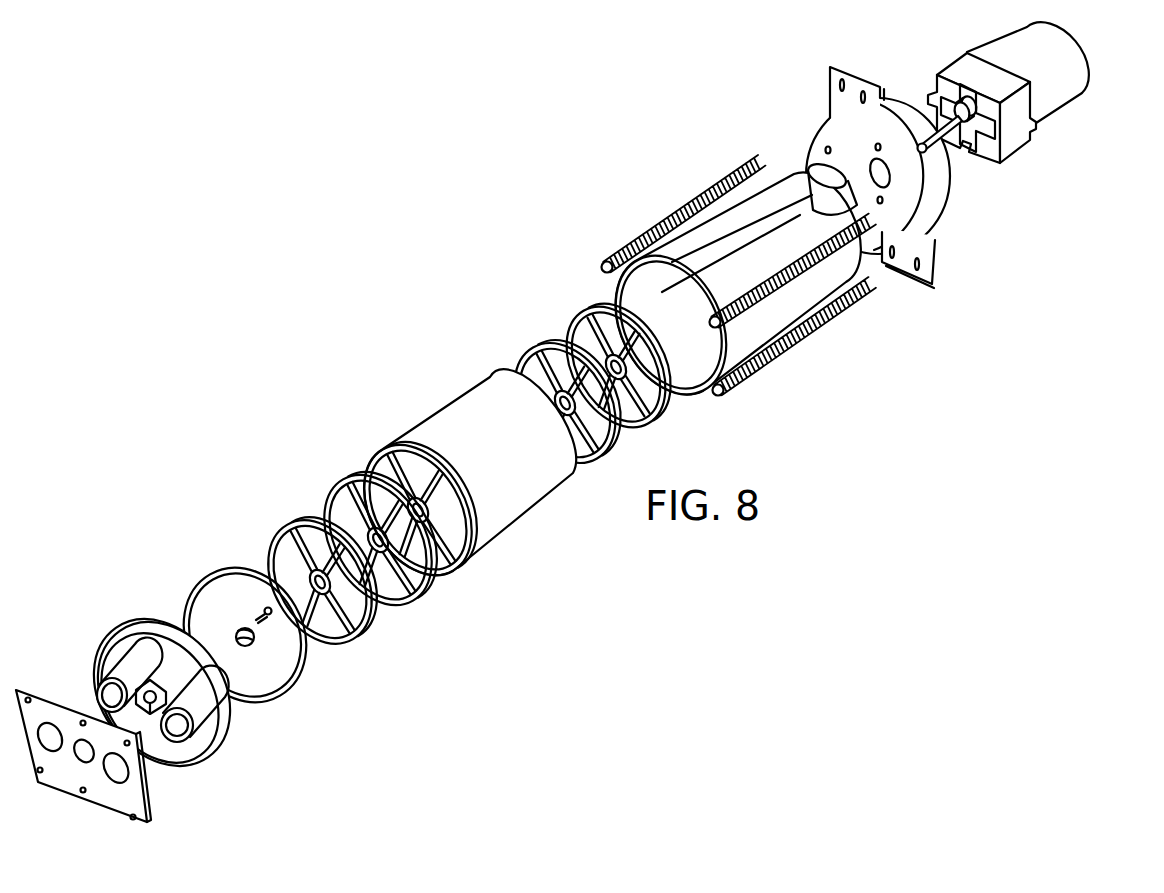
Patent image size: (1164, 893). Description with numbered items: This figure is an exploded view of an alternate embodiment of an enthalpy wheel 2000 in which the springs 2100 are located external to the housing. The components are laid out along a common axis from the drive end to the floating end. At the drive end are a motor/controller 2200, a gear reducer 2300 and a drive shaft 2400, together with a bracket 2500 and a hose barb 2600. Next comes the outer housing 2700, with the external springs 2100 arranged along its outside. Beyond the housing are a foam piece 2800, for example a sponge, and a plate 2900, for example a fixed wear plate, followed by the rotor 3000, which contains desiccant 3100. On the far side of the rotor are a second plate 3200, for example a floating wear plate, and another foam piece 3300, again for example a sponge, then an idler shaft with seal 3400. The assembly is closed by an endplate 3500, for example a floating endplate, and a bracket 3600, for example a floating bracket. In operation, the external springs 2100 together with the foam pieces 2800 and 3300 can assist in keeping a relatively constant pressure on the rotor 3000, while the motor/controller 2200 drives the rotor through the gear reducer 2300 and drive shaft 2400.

The enthalpy wheel 2000 is at (322, 332).
The springs 2100 is at (668, 222).
The motor/controller 2200 is at (1060, 62).
The gear reducer 2300 is at (990, 120).
The drive shaft 2400 is at (937, 147).
The bracket 2500 is at (892, 183).
The hose barb 2600 is at (927, 258).
The outer housing 2700 is at (743, 340).
The foam piece 2800 is at (575, 313).
The plate 2900 is at (520, 357).
The rotor 3000 is at (462, 413).
The desiccant 3100 is at (418, 508).
The plate 3200 is at (333, 487).
The foam piece 3300 is at (277, 530).
The idler shaft with seal 3400 is at (260, 613).
The endplate 3500 is at (237, 730).
The bracket 3600 is at (157, 788).